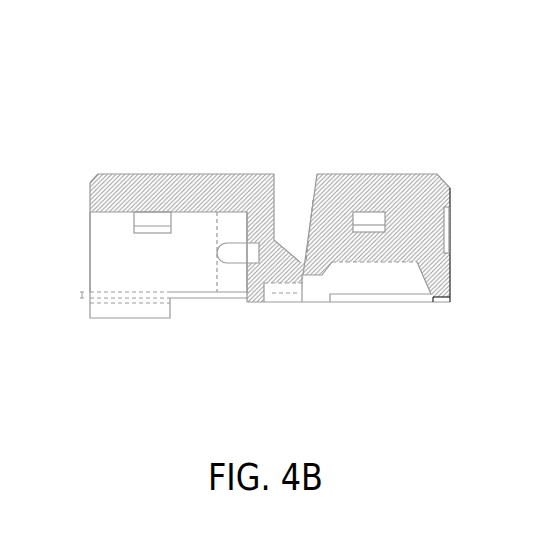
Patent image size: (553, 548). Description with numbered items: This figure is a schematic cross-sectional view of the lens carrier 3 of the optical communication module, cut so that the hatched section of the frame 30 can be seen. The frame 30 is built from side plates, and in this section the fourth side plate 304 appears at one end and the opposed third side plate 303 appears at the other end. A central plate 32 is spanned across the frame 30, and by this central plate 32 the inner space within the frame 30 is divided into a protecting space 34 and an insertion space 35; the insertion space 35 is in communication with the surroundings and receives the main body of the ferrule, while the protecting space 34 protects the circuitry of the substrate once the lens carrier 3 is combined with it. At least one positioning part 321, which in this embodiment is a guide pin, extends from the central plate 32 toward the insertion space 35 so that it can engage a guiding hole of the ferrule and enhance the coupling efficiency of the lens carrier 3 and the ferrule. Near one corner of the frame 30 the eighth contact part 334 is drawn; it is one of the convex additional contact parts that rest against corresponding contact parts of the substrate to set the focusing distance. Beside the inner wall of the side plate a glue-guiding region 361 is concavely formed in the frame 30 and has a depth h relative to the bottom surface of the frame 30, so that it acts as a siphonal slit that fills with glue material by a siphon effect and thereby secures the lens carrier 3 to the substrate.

The lens carrier 3 is at (120, 95).
The frame 30 is at (368, 140).
The fourth side plate 304 is at (90, 184).
The positioning part 321 is at (231, 243).
The insertion space 35 is at (110, 243).
The depth h is at (116, 293).
The glue-guiding region 361 is at (194, 317).
The central plate 32 is at (280, 256).
The protecting space 34 is at (352, 281).
The third side plate 303 is at (487, 250).
The eighth contact part 334 is at (474, 281).